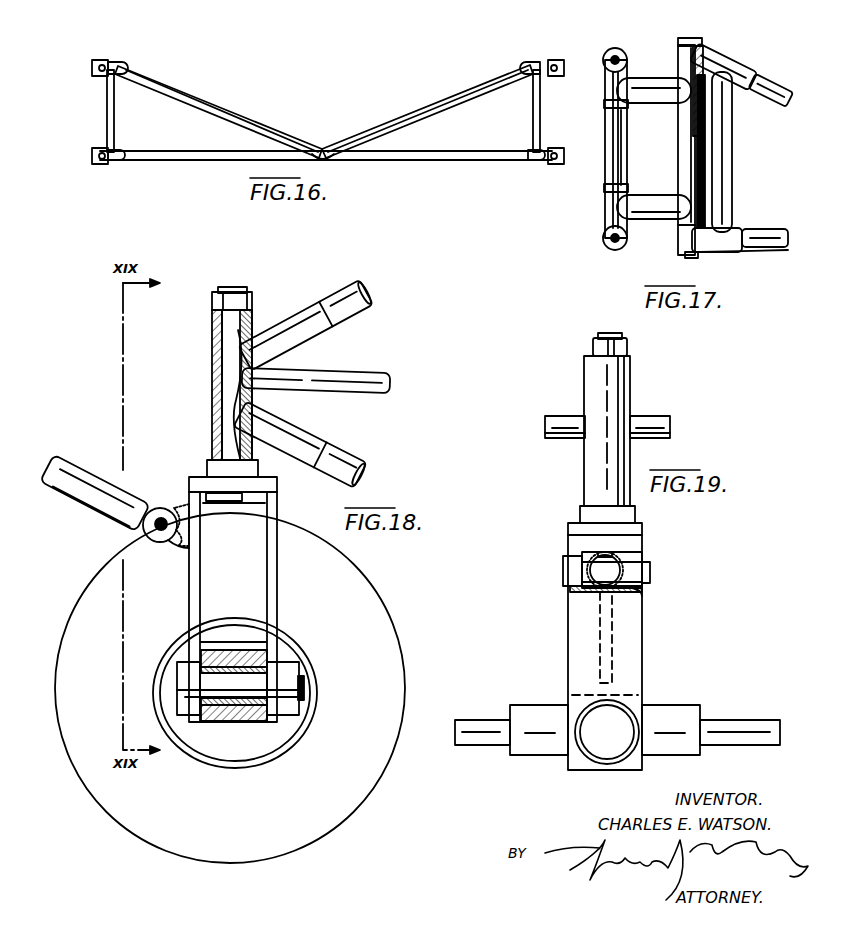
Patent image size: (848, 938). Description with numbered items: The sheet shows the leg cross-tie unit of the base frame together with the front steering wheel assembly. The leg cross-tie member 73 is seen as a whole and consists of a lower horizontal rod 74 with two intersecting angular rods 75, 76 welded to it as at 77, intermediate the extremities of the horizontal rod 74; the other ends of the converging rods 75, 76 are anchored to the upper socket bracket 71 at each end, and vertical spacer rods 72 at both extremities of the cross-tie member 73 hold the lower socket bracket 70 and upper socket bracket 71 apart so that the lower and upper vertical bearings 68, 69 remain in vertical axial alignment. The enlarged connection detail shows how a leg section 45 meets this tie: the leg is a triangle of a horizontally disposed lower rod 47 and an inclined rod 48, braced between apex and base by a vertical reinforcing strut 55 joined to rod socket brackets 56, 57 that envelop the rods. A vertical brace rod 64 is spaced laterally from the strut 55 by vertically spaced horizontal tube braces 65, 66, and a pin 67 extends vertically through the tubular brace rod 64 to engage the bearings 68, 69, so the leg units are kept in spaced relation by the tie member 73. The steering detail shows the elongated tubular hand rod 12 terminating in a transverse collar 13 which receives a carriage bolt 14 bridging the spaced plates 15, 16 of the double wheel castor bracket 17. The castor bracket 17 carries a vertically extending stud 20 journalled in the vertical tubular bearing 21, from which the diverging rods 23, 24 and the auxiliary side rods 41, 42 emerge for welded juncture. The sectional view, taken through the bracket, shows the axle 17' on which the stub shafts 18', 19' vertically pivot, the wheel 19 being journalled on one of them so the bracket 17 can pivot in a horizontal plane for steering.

In FIG. 18, the elongated tubular hand rod 12 is at (86, 474).
In FIG. 19, the elongated tubular hand rod 12 is at (622, 562).
In FIG. 18, the transverse collar 13 is at (152, 512).
In FIG. 19, the transverse collar 13 is at (585, 594).
In FIG. 18, the carriage bolt 14 is at (156, 528).
In FIG. 19, the carriage bolt 14 is at (650, 570).
In FIG. 18, the spaced plate 15 is at (178, 546).
In FIG. 19, the spaced plate 15 is at (640, 596).
In FIG. 18, the spaced plate 16 is at (176, 508).
In FIG. 19, the spaced plate 16 is at (562, 570).
In FIG. 18, the double wheel castor bracket 17 is at (241, 622).
In FIG. 19, the double wheel castor bracket 17 is at (605, 646).
In FIG. 19, the axle 17' is at (577, 741).
In FIG. 19, the stub shaft 18' is at (740, 745).
In FIG. 18, the wheel 19 is at (216, 688).
In FIG. 19, the stub shaft 19' is at (473, 749).
In FIG. 18, the vertically extending stud 20 is at (228, 404).
In FIG. 19, the vertically extending stud 20 is at (602, 332).
In FIG. 18, the vertical tubular bearing 21 is at (212, 370).
In FIG. 19, the vertical tubular bearing 21 is at (590, 388).
In FIG. 18, the diverging rod 23 is at (372, 306).
In FIG. 18, the diverging rod 24 is at (366, 450).
In FIG. 19, the auxiliary side rod 41 is at (556, 426).
In FIG. 18, the auxiliary side rod 42 is at (372, 384).
In FIG. 19, the auxiliary side rod 42 is at (654, 426).
In FIG. 17, the leg section 45 is at (604, 165).
In FIG. 17, the horizontally disposed lower rod 47 is at (604, 242).
In FIG. 17, the inclined rod 48 is at (608, 52).
In FIG. 17, the vertical reinforcing strut 55 is at (612, 140).
In FIG. 17, the rod socket bracket 56 is at (610, 216).
In FIG. 17, the rod socket bracket 57 is at (610, 102).
In FIG. 17, the vertical brace rod 64 is at (688, 170).
In FIG. 17, the horizontal tube brace 65 is at (645, 219).
In FIG. 17, the horizontal tube brace 66 is at (645, 84).
In FIG. 17, the pin 67 is at (705, 44).
In FIG. 16, the lower vertical bearing 68 is at (92, 155).
In FIG. 17, the lower vertical bearing 68 is at (685, 240).
In FIG. 16, the upper vertical bearing 69 is at (94, 64).
In FIG. 17, the upper vertical bearing 69 is at (680, 56).
In FIG. 16, the lower socket bracket 70 is at (112, 160).
In FIG. 17, the lower socket bracket 70 is at (730, 232).
In FIG. 16, the upper socket bracket 71 is at (112, 64).
In FIG. 17, the upper socket bracket 71 is at (738, 60).
In FIG. 16, the vertical spacer rod 72 is at (116, 108).
In FIG. 17, the vertical spacer rod 72 is at (733, 118).
In FIG. 16, the cross-tie member 73 is at (236, 162).
In FIG. 17, the cross-tie member 73 is at (755, 250).
In FIG. 16, the lower horizontal rod 74 is at (388, 160).
In FIG. 17, the lower horizontal rod 74 is at (768, 232).
In FIG. 16, the angular rod 75 is at (420, 110).
In FIG. 16, the angular rod 76 is at (218, 110).
In FIG. 17, the angular rod 76 is at (772, 82).
In FIG. 16, the weld point 77 is at (324, 152).